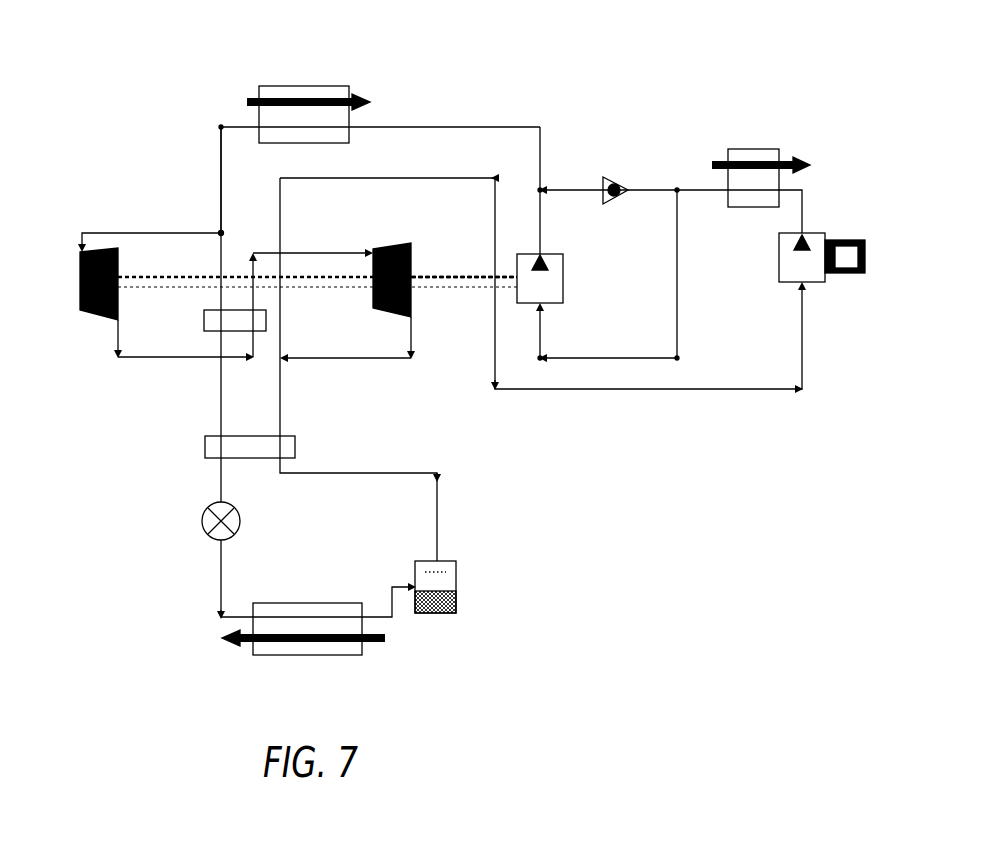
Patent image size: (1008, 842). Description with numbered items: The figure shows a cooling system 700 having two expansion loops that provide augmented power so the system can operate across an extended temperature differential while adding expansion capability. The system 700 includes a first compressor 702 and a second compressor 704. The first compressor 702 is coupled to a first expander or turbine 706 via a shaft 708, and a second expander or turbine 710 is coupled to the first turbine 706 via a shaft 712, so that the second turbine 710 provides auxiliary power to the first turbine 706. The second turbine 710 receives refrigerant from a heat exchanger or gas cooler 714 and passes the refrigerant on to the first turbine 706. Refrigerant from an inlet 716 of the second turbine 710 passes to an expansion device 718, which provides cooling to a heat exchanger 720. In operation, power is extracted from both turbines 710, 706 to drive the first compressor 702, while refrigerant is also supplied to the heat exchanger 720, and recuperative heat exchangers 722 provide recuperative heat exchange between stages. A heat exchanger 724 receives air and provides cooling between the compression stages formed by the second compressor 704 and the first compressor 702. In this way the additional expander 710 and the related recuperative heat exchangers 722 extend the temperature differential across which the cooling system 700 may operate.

The system 700 is at (701, 60).
The first compressor 702 is at (563, 280).
The second compressor 704 is at (814, 232).
The first turbine 706 is at (389, 243).
The shaft 708 is at (460, 276).
The second turbine 710 is at (85, 315).
The shaft 712 is at (163, 277).
The gas cooler 714 is at (313, 86).
The inlet 716 is at (223, 233).
The expansion device 718 is at (242, 514).
The heat exchanger 720 is at (338, 656).
The recuperative heat exchangers 722 is at (204, 318).
The heat exchanger 724 is at (762, 148).